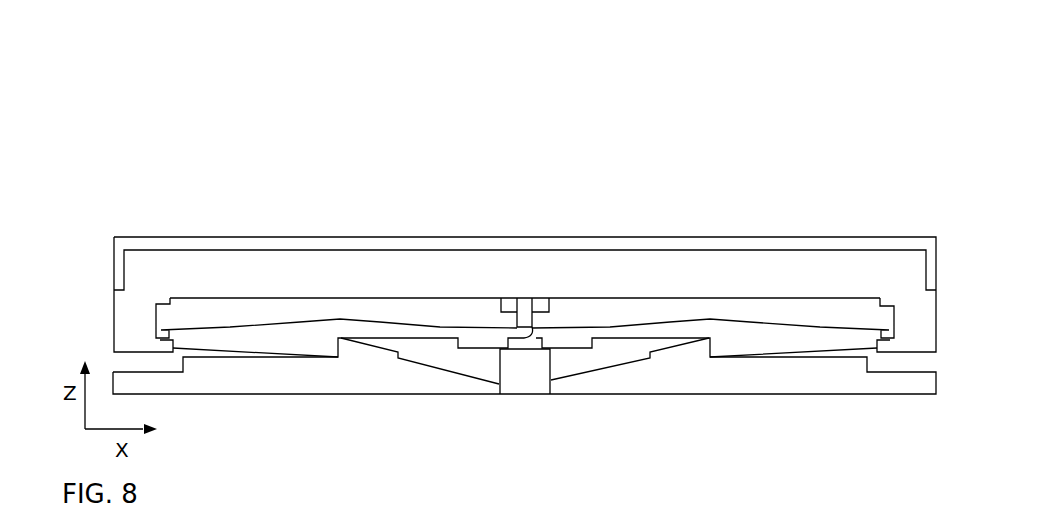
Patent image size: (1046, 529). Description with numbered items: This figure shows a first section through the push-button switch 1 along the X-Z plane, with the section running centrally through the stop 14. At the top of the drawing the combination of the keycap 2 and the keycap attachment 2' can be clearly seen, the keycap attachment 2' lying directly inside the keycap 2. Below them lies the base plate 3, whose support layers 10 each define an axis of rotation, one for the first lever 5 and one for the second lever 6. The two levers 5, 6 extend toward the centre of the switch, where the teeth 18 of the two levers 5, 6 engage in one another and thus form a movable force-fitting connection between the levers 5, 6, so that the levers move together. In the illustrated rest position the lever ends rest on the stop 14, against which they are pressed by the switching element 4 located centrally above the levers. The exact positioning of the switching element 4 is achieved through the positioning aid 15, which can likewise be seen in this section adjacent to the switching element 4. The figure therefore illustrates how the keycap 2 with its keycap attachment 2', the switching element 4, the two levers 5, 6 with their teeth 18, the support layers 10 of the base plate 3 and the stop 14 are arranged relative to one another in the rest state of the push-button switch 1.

The push-button switch 1 is at (370, 198).
The keycap 2 is at (525, 260).
The keycap attachment 2' is at (525, 221).
The base plate 3 is at (736, 394).
The switching element 4 is at (515, 318).
The first lever 5 is at (304, 321).
The second lever 6 is at (676, 322).
The support layers 10 is at (345, 341).
The stop 14 is at (500, 368).
The positioning aid 15 is at (547, 302).
The teeth 18 is at (536, 340).